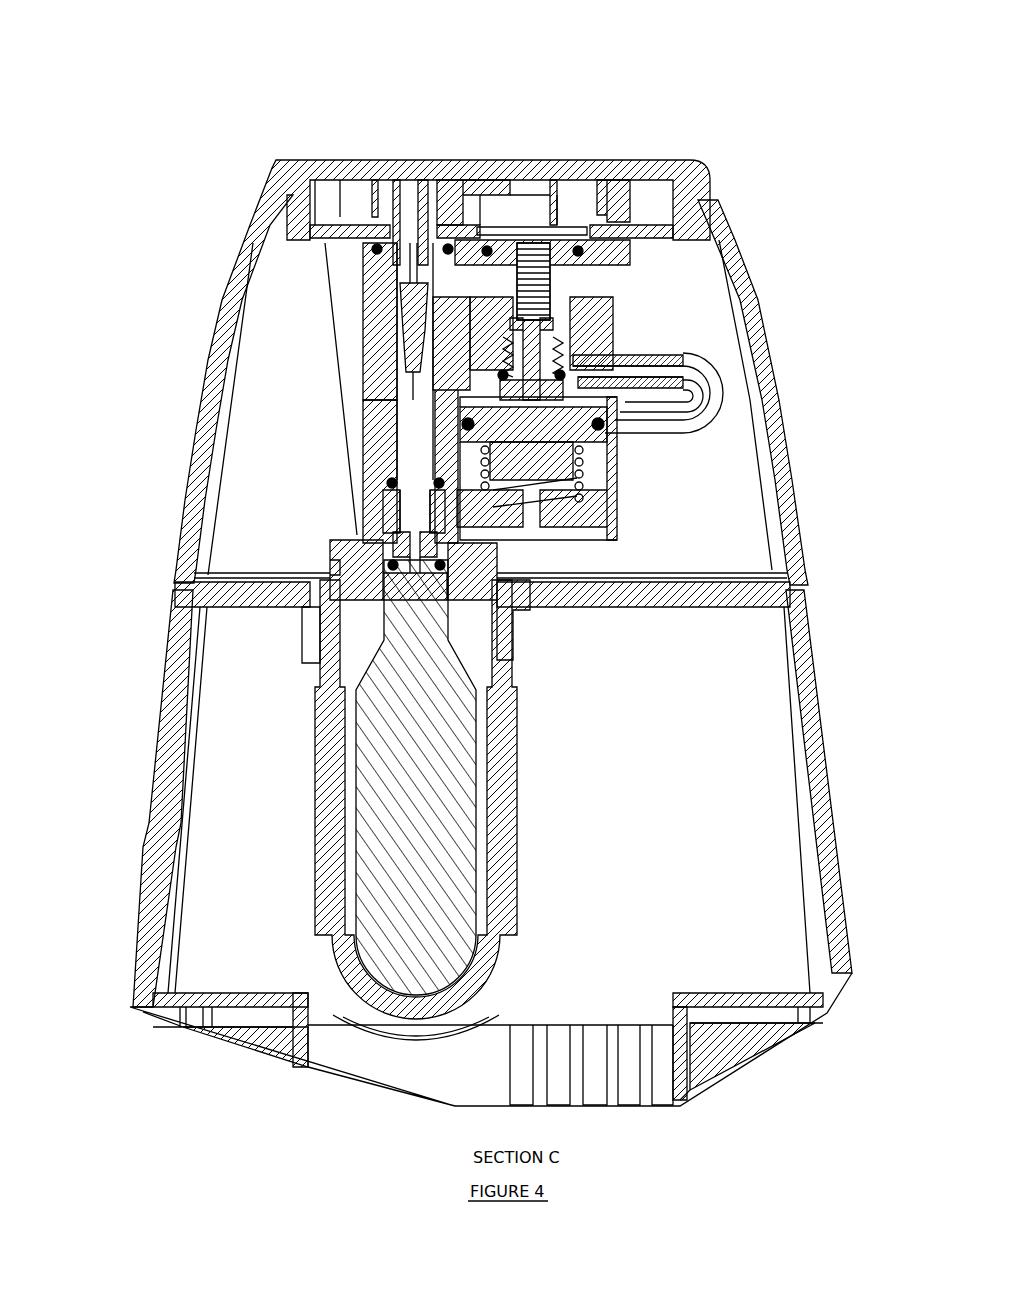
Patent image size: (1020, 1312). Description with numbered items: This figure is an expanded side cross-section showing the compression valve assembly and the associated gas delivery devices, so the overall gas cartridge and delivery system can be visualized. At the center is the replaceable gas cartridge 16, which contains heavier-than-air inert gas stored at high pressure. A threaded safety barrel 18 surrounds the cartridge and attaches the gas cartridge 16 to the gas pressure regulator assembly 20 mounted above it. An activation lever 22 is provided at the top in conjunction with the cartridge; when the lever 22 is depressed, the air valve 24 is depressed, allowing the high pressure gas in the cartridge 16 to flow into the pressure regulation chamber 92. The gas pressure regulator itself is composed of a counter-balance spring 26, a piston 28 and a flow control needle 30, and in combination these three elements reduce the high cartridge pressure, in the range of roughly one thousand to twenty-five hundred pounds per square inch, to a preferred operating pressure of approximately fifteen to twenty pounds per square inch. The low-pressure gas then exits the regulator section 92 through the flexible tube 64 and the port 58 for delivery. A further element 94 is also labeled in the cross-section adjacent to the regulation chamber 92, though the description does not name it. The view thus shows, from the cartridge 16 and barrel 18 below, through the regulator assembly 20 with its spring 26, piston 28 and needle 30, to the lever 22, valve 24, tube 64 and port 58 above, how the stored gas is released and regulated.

The replaceable gas cartridge 16 is at (360, 683).
The threaded safety barrel 18 is at (313, 703).
The gas pressure regulator assembly 20 is at (362, 362).
The activation lever 22 is at (448, 157).
The air valve 24 is at (362, 290).
The counter-balance spring 26 is at (583, 478).
The piston 28 is at (658, 372).
The flow control needle 30 is at (557, 311).
The port 58 is at (683, 356).
The flexible tube 64 is at (724, 372).
The pressure regulation chamber 92 is at (588, 398).
The valve seat 94 is at (570, 385).